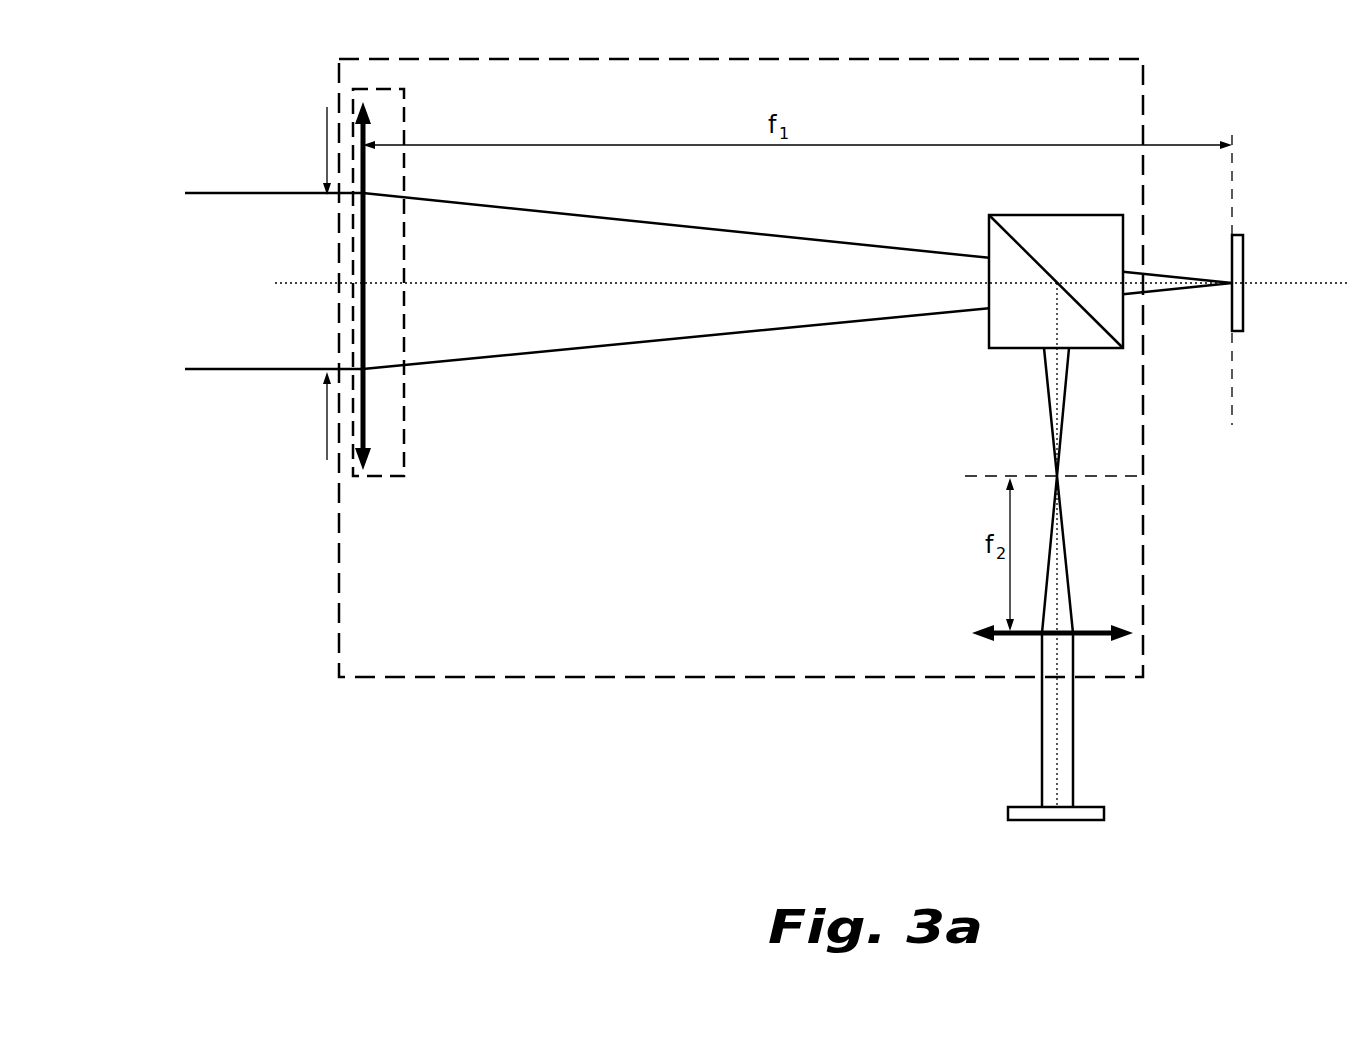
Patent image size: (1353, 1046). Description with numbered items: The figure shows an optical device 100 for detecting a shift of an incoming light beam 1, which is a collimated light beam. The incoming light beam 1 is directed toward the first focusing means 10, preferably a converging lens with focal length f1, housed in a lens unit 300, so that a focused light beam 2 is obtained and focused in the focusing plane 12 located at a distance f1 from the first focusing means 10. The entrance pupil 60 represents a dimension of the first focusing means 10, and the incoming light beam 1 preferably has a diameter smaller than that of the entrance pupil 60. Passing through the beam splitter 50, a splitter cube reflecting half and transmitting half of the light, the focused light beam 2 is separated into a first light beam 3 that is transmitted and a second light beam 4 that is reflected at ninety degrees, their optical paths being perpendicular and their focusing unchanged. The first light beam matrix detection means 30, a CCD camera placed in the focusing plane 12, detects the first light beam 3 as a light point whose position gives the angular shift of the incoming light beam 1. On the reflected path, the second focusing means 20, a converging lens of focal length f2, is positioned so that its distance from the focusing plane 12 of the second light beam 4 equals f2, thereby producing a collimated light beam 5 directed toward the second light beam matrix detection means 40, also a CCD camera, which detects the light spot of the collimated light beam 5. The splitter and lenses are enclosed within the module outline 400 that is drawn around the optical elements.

The optical system 100 is at (216, 121).
The incoming light beam 1 is at (269, 371).
The focused light beam 2 is at (497, 356).
The first light beam 3 is at (1160, 273).
The second light beam 4 is at (1067, 392).
The collimated light beam 5 is at (1073, 737).
The first focusing means 10 is at (363, 178).
The focusing plane 12 is at (1232, 185).
The second focusing means 20 is at (1086, 628).
The first light beam matrix detection means 30 is at (1242, 257).
The second light beam matrix detection means 40 is at (1091, 813).
The beam splitter 50 is at (1039, 262).
The entrance pupil 60 is at (327, 128).
The lens unit 300 is at (405, 447).
The optical module housing 400 is at (662, 678).